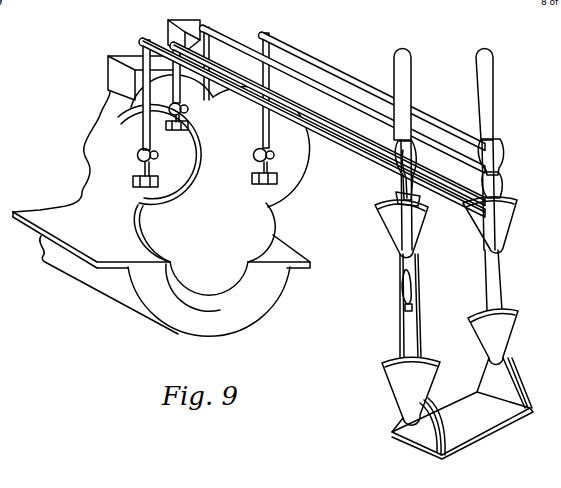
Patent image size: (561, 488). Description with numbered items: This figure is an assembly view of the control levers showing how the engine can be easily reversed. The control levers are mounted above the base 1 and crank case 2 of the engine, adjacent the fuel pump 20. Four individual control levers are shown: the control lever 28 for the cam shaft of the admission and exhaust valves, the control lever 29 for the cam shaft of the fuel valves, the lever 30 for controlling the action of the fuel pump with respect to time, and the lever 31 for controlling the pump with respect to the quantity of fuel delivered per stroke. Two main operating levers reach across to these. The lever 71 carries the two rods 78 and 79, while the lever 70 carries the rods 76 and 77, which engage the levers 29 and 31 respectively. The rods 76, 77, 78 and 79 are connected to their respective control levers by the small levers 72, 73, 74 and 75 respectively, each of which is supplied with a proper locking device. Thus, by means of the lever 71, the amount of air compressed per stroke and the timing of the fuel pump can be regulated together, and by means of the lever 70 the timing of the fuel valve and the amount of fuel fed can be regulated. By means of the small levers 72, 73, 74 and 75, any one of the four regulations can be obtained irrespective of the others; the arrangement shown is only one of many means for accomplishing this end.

The base 1 is at (165, 286).
The crank case 2 is at (105, 225).
The fuel pump 20 is at (117, 84).
The control lever 28 is at (151, 143).
The control lever 29 is at (263, 134).
The lever 30 is at (206, 103).
The lever 31 is at (212, 38).
The lever 70 is at (535, 89).
The lever 71 is at (440, 80).
The small lever 72 is at (538, 140).
The small lever 73 is at (538, 168).
The small lever 74 is at (411, 173).
The small lever 75 is at (401, 197).
The rod 76 is at (353, 58).
The rod 77 is at (215, 31).
The rod 78 is at (358, 143).
The rod 79 is at (243, 94).